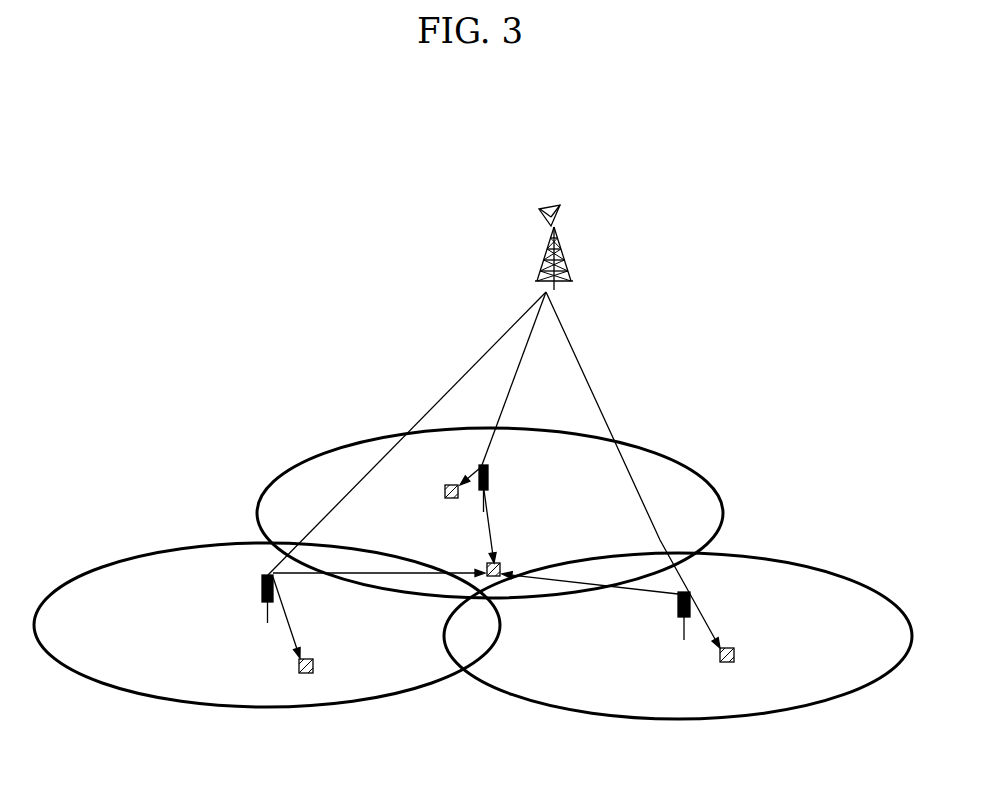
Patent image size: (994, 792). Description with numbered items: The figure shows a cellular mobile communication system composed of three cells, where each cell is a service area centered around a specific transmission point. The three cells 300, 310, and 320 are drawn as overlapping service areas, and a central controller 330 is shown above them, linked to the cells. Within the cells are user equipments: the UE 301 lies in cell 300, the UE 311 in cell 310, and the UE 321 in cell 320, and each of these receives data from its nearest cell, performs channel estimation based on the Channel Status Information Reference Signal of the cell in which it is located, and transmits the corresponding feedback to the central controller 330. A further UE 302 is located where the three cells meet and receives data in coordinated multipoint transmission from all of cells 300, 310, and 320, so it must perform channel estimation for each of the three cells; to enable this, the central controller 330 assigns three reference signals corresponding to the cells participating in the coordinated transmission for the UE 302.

The cell 300 is at (337, 449).
The UE 301 is at (445, 486).
The UE 302 is at (501, 564).
The cell 310 is at (145, 555).
The UE 311 is at (313, 659).
The cell 320 is at (800, 565).
The UE 321 is at (734, 649).
The central controller 330 is at (567, 252).